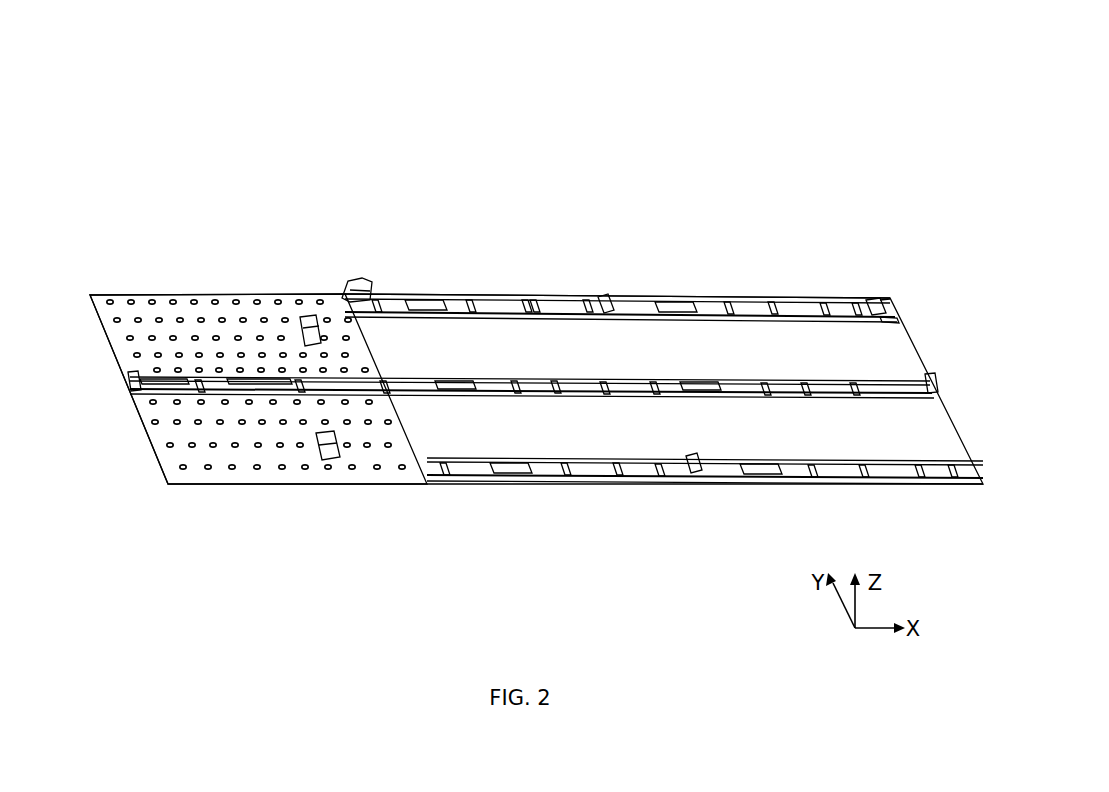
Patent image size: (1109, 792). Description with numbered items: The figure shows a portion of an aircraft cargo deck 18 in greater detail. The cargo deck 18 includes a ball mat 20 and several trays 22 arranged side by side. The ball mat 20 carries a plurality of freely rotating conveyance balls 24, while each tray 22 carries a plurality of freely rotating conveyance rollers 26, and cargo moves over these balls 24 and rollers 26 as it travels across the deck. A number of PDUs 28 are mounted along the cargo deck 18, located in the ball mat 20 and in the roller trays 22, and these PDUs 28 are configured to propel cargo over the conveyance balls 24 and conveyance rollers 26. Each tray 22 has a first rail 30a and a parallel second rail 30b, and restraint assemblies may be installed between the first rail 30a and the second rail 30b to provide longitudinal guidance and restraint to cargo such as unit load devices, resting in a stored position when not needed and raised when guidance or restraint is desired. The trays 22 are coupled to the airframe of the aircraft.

The cargo deck 18 is at (288, 174).
The ball mat 20 is at (146, 332).
The tray 22 is at (792, 289).
The conveyance ball 24 is at (210, 308).
The conveyance roller 26 is at (527, 302).
The PDU 28 is at (307, 320).
The first rail 30a is at (883, 300).
The second rail 30b is at (893, 319).